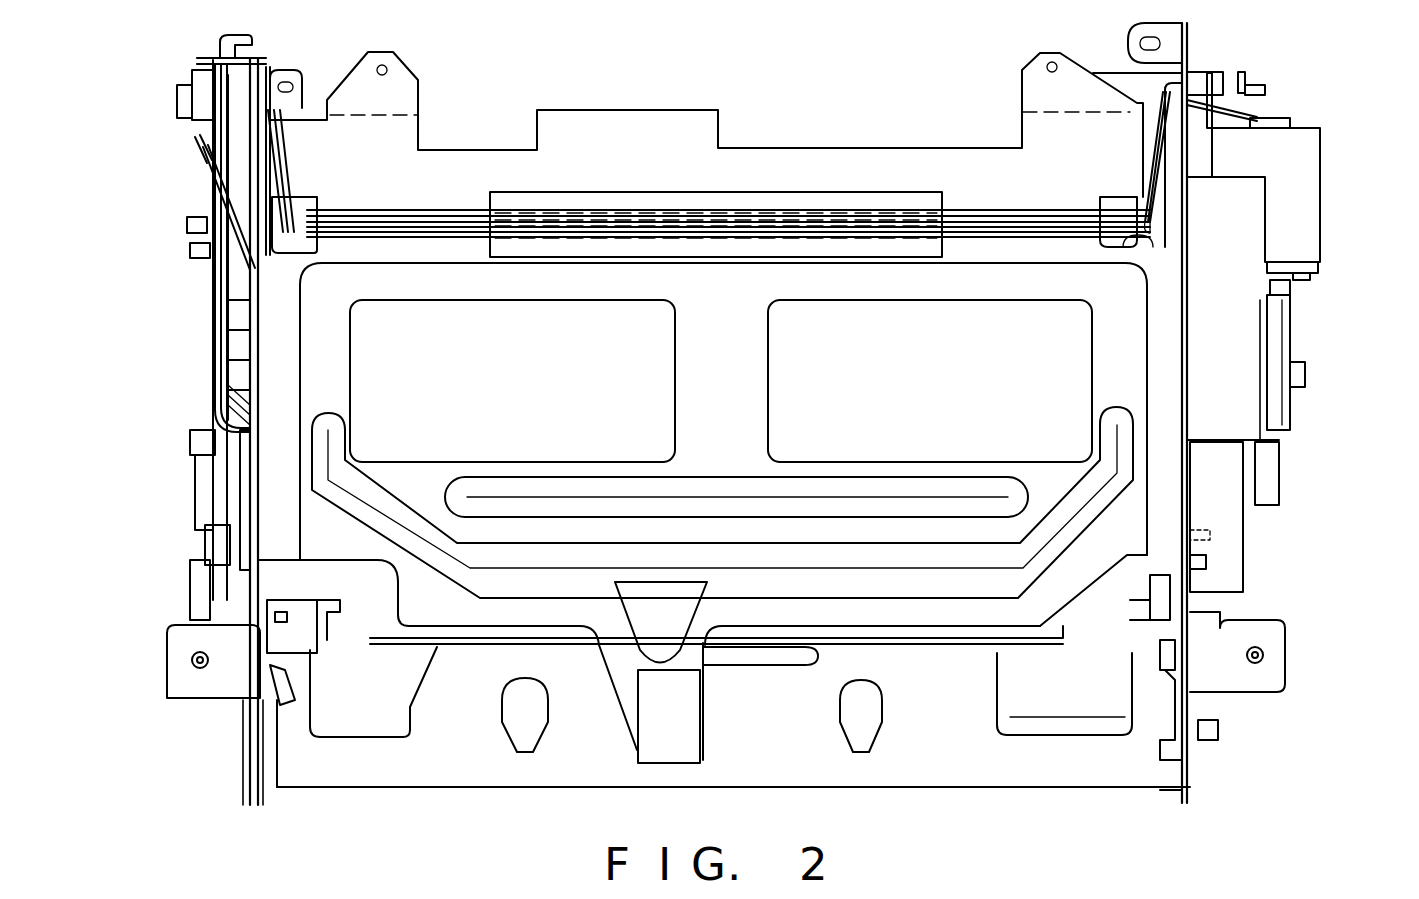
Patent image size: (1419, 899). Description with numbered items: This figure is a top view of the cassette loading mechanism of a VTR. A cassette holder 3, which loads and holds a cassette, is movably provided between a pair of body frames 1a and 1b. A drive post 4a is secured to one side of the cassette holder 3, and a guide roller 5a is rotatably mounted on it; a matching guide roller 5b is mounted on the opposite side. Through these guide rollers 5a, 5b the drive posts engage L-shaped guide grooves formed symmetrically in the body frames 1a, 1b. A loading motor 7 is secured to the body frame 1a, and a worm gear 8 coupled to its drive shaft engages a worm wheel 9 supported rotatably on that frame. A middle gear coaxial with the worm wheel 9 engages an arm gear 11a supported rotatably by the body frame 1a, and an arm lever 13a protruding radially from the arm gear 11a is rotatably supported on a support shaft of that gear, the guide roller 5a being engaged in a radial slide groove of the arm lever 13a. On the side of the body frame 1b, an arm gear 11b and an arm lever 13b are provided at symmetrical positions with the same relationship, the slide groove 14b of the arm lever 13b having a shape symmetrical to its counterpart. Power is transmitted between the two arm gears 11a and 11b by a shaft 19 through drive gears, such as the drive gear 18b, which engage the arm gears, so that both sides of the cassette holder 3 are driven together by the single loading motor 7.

The cassette holder 3 is at (797, 760).
The loading motor 7 is at (1323, 215).
The worm gear 8 is at (1290, 352).
The worm wheel 9 is at (1268, 480).
The shaft 19 is at (937, 640).
The body frame 1a is at (1182, 505).
The body frame 1b is at (262, 520).
The drive post 4a is at (1405, 703).
The guide roller 5a is at (1264, 431).
The arm gear 11a is at (1264, 431).
The arm lever 13a is at (1264, 431).
The slide groove 14b is at (130, 647).
The guide roller 5b is at (737, 372).
The arm gear 11b is at (737, 372).
The arm lever 13b is at (738, 372).
The drive gear 18b is at (739, 372).